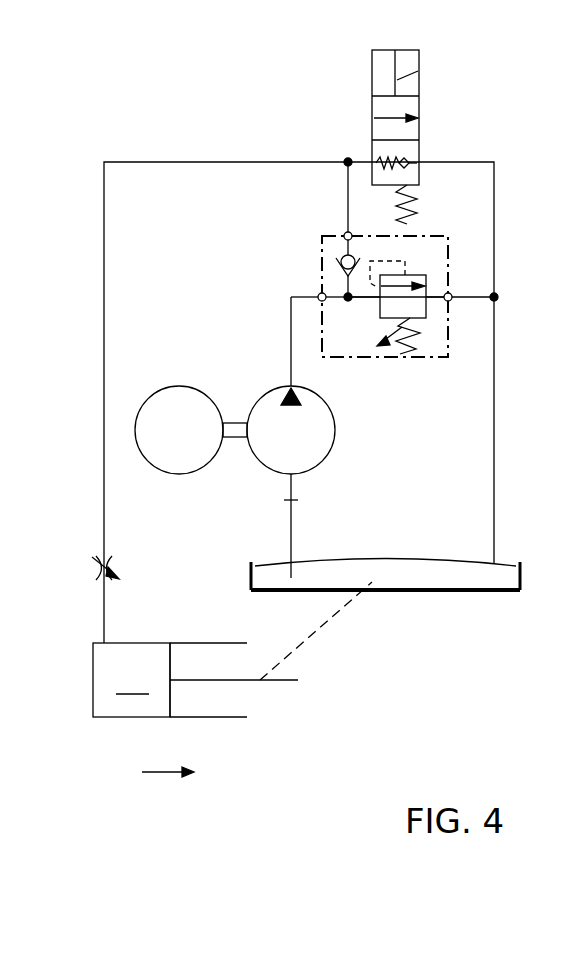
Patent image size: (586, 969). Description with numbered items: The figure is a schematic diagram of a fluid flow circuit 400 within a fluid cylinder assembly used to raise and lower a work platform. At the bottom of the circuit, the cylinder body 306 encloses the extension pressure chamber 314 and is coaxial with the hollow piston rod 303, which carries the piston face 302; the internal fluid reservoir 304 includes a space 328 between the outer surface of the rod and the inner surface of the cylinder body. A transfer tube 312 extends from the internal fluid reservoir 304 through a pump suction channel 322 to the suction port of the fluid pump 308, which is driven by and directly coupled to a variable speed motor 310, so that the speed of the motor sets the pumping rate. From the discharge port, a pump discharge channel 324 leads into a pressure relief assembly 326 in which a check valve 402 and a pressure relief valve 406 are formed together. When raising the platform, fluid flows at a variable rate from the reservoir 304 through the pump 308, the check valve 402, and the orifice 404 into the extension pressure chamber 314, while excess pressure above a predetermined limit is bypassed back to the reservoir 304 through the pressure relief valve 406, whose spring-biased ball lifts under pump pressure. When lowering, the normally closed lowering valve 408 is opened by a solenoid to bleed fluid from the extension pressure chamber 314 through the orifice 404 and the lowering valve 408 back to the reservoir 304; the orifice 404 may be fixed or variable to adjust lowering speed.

The fluid flow circuit 400 is at (263, 72).
The lowering valve 408 is at (422, 152).
The pressure relief assembly 326 is at (450, 251).
The check valve 402 is at (336, 253).
The pressure relief valve 406 is at (418, 305).
The pump discharge channel 324 is at (290, 336).
The variable speed motor 310 is at (179, 386).
The fluid pump 308 is at (335, 428).
The pump suction channel 322 is at (291, 487).
The transfer tube 312 is at (291, 521).
The orifice 404 is at (120, 571).
The internal fluid reservoir 304 is at (413, 578).
The cylinder body 306 is at (125, 717).
The extension pressure chamber 314 is at (136, 681).
The hollow piston rod 303 is at (165, 655).
The piston face 302 is at (195, 681).
The space 328 is at (160, 774).